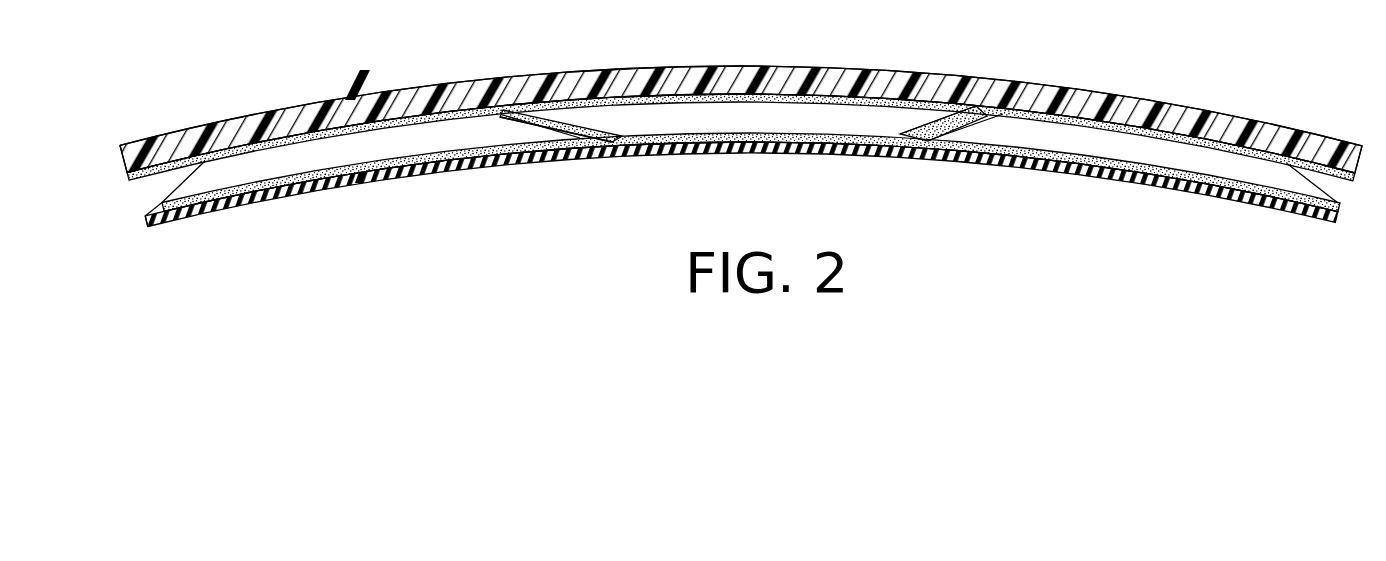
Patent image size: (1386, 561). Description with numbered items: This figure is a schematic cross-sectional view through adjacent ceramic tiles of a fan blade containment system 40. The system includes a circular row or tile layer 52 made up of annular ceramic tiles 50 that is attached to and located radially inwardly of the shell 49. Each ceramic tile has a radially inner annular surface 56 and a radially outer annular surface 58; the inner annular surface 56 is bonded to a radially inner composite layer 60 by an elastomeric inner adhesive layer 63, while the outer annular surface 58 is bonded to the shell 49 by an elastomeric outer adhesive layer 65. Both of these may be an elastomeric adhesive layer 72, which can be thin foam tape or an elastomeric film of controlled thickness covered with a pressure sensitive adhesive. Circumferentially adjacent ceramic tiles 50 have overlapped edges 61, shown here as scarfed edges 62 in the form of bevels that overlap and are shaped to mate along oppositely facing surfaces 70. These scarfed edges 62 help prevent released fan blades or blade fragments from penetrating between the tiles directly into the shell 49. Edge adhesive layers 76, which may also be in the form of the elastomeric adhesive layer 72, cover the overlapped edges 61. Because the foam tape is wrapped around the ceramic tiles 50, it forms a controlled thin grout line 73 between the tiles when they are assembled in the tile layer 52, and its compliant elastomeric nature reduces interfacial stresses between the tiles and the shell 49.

The fan blade containment system 40 is at (631, 184).
The shell 49 is at (1134, 94).
The ceramic tiles 50 is at (318, 153).
The tile layer 52 is at (156, 197).
The radially inner annular surface 56 is at (826, 152).
The radially outer annular surface 58 is at (747, 113).
The radially inner composite layer 60 is at (1194, 196).
The overlapped edges 61 is at (555, 120).
The scarfed edges 62 is at (182, 187).
The inner adhesive layer 63 is at (614, 143).
The outer adhesive layer 65 is at (658, 103).
The oppositely facing surfaces 70 is at (603, 155).
The elastomeric adhesive layer 72 is at (352, 102).
The grout line 73 is at (545, 136).
The edge adhesive layers 76 is at (937, 130).